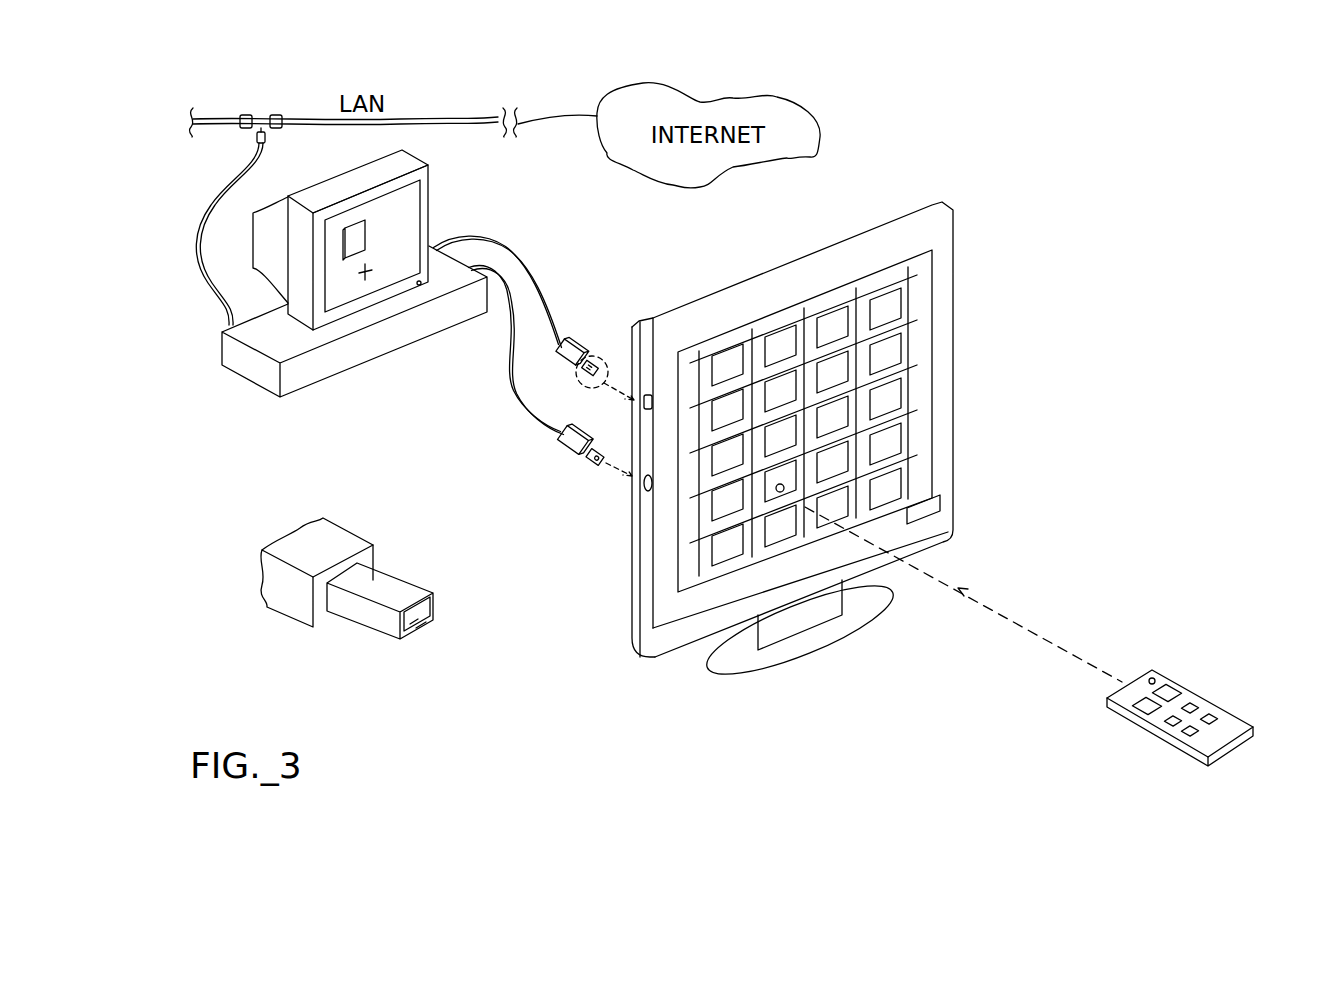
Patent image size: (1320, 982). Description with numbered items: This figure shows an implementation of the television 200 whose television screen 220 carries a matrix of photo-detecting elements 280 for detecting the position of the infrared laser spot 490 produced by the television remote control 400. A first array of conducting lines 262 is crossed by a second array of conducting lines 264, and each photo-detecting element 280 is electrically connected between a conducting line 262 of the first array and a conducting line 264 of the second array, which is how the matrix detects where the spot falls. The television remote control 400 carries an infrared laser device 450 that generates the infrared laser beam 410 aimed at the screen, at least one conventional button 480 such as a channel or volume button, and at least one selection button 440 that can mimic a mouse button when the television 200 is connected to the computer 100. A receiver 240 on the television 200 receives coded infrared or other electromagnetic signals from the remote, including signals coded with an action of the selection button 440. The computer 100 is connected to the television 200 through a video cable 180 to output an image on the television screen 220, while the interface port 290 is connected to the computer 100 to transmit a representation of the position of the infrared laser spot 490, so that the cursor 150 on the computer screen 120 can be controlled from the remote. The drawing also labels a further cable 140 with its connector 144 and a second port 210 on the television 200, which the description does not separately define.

The computer 100 is at (345, 322).
The computer screen 120 is at (405, 217).
The cable 140 is at (508, 248).
The connector 144 is at (572, 350).
The cursor 150 is at (367, 273).
The video cable 180 is at (528, 407).
The television 200 is at (825, 403).
The port 210 is at (643, 488).
The television screen 220 is at (920, 268).
The receiver 240 is at (941, 497).
The first array of conducting lines 262 is at (868, 292).
The second array of conducting lines 264 is at (900, 413).
The photo-detecting element 280 is at (900, 329).
The interface port 290 is at (650, 392).
The television remote control 400 is at (1156, 694).
The infrared laser beam 410 is at (975, 603).
The selection button 440 is at (1137, 713).
The infrared laser device 450 is at (1127, 683).
The conventional button 480 is at (1172, 730).
The infrared laser spot 490 is at (783, 486).